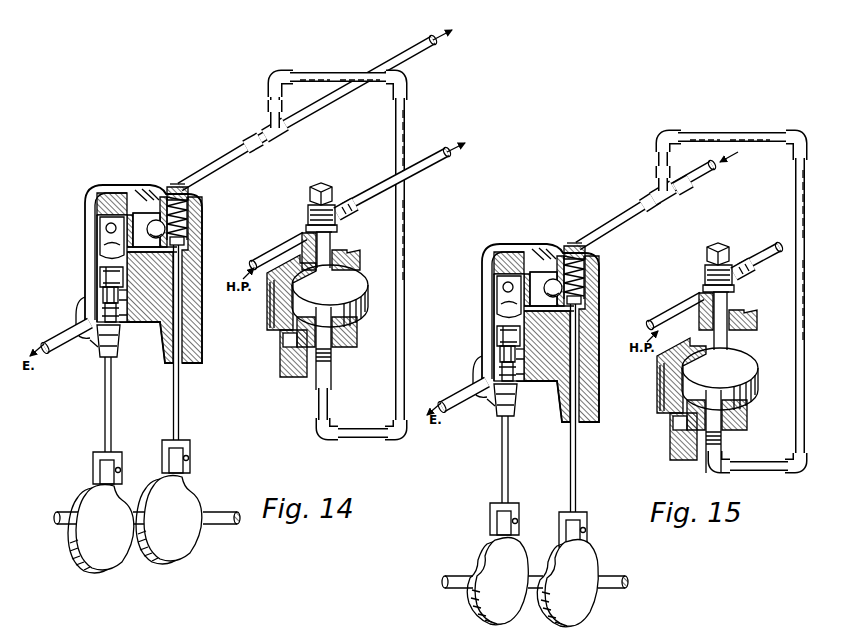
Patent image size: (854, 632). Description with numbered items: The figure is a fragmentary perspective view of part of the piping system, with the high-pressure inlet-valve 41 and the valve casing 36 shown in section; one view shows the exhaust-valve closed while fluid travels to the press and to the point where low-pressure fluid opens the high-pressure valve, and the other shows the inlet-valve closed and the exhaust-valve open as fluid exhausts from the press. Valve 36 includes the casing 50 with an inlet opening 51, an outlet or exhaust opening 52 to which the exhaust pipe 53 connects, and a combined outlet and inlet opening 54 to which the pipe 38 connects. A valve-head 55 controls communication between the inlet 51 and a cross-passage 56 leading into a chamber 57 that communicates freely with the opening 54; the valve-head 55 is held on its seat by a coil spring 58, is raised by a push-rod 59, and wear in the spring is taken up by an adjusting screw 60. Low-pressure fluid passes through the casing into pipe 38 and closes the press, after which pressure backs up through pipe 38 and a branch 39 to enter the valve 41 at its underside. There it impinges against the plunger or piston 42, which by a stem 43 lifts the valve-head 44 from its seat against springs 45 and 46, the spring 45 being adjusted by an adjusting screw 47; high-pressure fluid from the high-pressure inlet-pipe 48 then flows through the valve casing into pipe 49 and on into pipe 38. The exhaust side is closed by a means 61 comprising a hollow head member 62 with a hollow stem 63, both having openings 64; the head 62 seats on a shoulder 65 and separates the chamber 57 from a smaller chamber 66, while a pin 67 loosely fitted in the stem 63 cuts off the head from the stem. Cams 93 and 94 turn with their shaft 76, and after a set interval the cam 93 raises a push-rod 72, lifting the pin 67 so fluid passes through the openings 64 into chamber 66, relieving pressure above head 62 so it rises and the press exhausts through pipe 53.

In FIG. 14, the valve casing 36 is at (204, 331).
In FIG. 15, the valve casing 36 is at (590, 410).
In FIG. 14, the pipe 38 is at (249, 142).
In FIG. 15, the pipe 38 is at (642, 208).
In FIG. 14, the branch 39 is at (403, 148).
In FIG. 15, the branch 39 is at (798, 205).
In FIG. 14, the valve 41 is at (358, 333).
In FIG. 15, the valve 41 is at (732, 414).
In FIG. 14, the plunger or piston 42 is at (360, 280).
In FIG. 15, the plunger or piston 42 is at (735, 379).
In FIG. 14, the stem 43 is at (346, 260).
In FIG. 15, the stem 43 is at (738, 310).
In FIG. 14, the valve-head 44 is at (345, 206).
In FIG. 15, the valve-head 44 is at (751, 254).
In FIG. 14, the spring 45 is at (308, 218).
In FIG. 15, the spring 45 is at (705, 277).
In FIG. 14, the spring 46 is at (272, 296).
In FIG. 15, the spring 46 is at (721, 392).
In FIG. 14, the adjusting screw 47 is at (322, 183).
In FIG. 15, the adjusting screw 47 is at (720, 243).
In FIG. 14, the high-pressure inlet-pipe 48 is at (278, 254).
In FIG. 15, the high-pressure inlet-pipe 48 is at (673, 308).
In FIG. 14, the pipe 49 is at (451, 163).
In FIG. 15, the pipe 49 is at (769, 261).
In FIG. 14, the casing 50 is at (87, 244).
In FIG. 15, the casing 50 is at (523, 333).
In FIG. 14, the inlet opening 51 is at (150, 214).
In FIG. 15, the inlet opening 51 is at (543, 268).
In FIG. 14, the outlet or exhaust opening 52 is at (93, 349).
In FIG. 15, the outlet or exhaust opening 52 is at (491, 416).
In FIG. 14, the exhaust pipe 53 is at (68, 351).
In FIG. 15, the exhaust pipe 53 is at (457, 392).
In FIG. 14, the combined outlet and inlet opening 54 is at (109, 231).
In FIG. 15, the combined outlet and inlet opening 54 is at (509, 297).
In FIG. 14, the valve-head 55 is at (164, 231).
In FIG. 15, the valve-head 55 is at (586, 291).
In FIG. 14, the cross-passage 56 is at (185, 245).
In FIG. 15, the cross-passage 56 is at (597, 312).
In FIG. 14, the chamber 57 is at (97, 216).
In FIG. 15, the chamber 57 is at (473, 327).
In FIG. 14, the coil spring 58 is at (188, 210).
In FIG. 15, the coil spring 58 is at (598, 277).
In FIG. 14, the push-rod 59 is at (180, 407).
In FIG. 15, the push-rod 59 is at (577, 459).
In FIG. 14, the adjusting screw 60 is at (181, 186).
In FIG. 15, the adjusting screw 60 is at (577, 238).
In FIG. 14, the means for closing the exhaust passage 61 is at (100, 269).
In FIG. 15, the means for closing the exhaust passage 61 is at (485, 325).
In FIG. 14, the hollow head member 62 is at (104, 287).
In FIG. 15, the hollow head member 62 is at (483, 340).
In FIG. 14, the hollow stem 63 is at (135, 304).
In FIG. 15, the hollow stem 63 is at (532, 360).
In FIG. 14, the openings 64 is at (105, 304).
In FIG. 15, the openings 64 is at (483, 357).
In FIG. 14, the shoulder 65 is at (135, 289).
In FIG. 15, the shoulder 65 is at (532, 339).
In FIG. 14, the smaller chamber 66 is at (135, 317).
In FIG. 15, the smaller chamber 66 is at (532, 376).
In FIG. 14, the pin 67 is at (117, 338).
In FIG. 15, the pin 67 is at (520, 400).
In FIG. 14, the push-rod 72 is at (112, 413).
In FIG. 15, the push-rod 72 is at (509, 457).
In FIG. 14, the cam shaft 76 is at (140, 515).
In FIG. 15, the cam shaft 76 is at (540, 578).
In FIG. 14, the cam 93 is at (98, 494).
In FIG. 15, the cam 93 is at (495, 556).
In FIG. 14, the cam 94 is at (190, 500).
In FIG. 15, the cam 94 is at (594, 562).